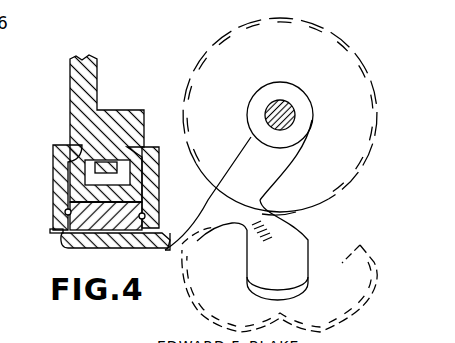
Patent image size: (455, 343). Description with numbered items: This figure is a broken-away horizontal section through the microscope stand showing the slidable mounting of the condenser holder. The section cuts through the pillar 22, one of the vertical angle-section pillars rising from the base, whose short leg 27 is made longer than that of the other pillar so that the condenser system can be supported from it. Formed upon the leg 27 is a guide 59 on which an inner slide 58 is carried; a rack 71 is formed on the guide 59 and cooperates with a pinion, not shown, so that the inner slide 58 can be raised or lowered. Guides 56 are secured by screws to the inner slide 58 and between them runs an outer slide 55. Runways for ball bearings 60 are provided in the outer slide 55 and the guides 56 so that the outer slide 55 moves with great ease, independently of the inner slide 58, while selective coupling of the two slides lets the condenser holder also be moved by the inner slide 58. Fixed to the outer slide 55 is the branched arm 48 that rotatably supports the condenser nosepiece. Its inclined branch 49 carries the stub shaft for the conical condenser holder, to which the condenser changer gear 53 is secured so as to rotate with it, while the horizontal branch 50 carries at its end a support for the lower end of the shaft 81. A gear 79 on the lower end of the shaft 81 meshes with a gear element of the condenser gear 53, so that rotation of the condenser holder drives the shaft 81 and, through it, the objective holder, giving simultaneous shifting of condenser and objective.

The pillar 22 is at (62, 79).
The short leg 27 is at (88, 150).
The arm 48 is at (163, 243).
The branch 49 is at (277, 262).
The branch 50 is at (244, 164).
The condenser changer gear 53 is at (360, 245).
The outer slide 55 is at (56, 235).
The guides 56 is at (153, 155).
The inner slide 58 is at (72, 147).
The guide 59 is at (84, 157).
The ball bearings 60 is at (65, 213).
The rack 71 is at (102, 172).
The gear 79 is at (334, 62).
The shaft 81 is at (272, 102).